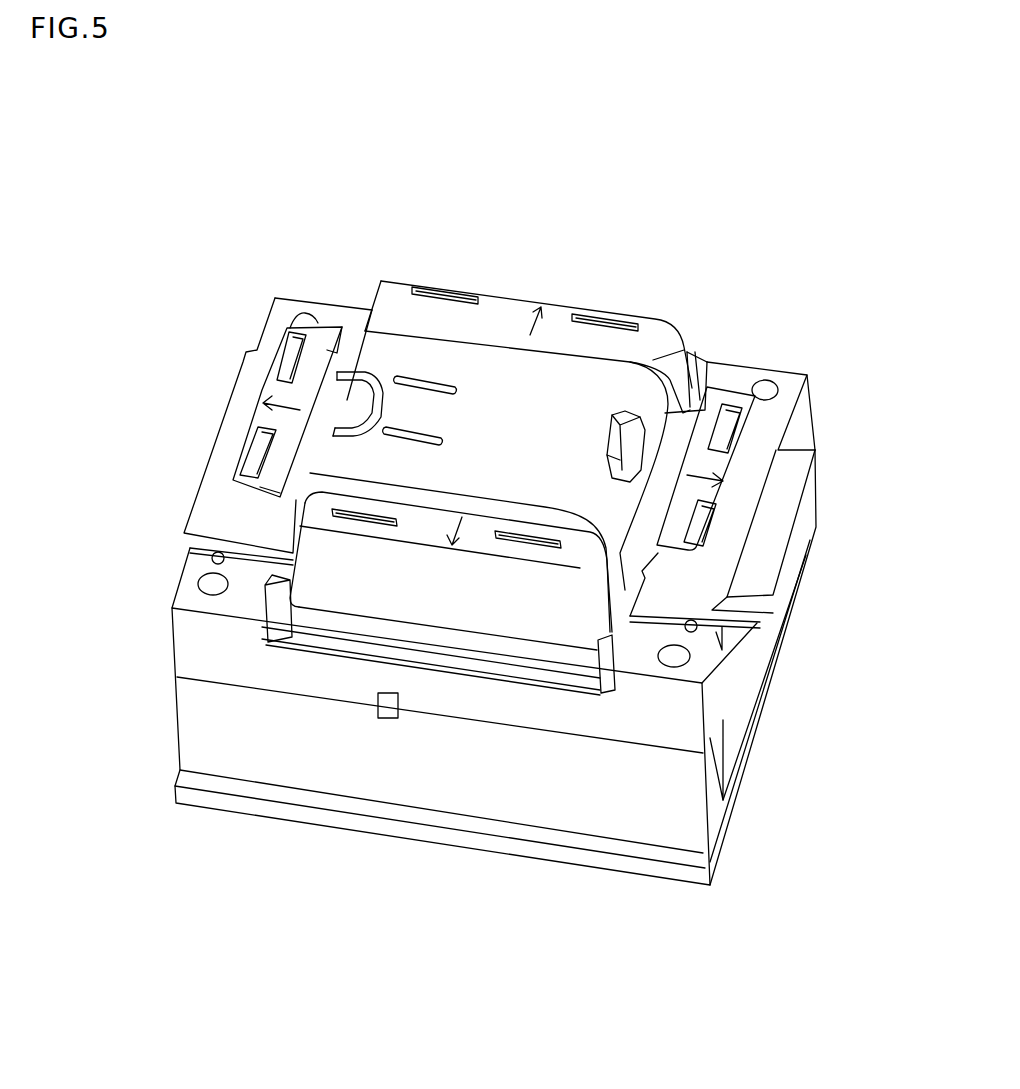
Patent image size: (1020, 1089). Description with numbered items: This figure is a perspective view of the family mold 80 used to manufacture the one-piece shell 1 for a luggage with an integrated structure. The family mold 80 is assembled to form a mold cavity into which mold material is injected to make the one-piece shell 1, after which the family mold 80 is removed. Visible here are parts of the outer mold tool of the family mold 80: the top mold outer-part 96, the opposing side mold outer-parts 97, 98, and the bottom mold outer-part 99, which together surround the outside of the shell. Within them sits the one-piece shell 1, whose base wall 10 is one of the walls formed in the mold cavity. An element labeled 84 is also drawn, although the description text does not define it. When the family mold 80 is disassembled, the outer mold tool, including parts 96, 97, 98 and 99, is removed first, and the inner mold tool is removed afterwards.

The family mold 80 is at (196, 167).
The side mold outer-part 97 is at (497, 305).
The side mold outer-part 98 is at (372, 572).
The bottom mold outer-part 99 is at (262, 406).
The top mold outer-part 96 is at (760, 436).
The support bracket 84 is at (738, 393).
The base wall 10 is at (557, 407).
The one-piece shell 1 is at (634, 401).